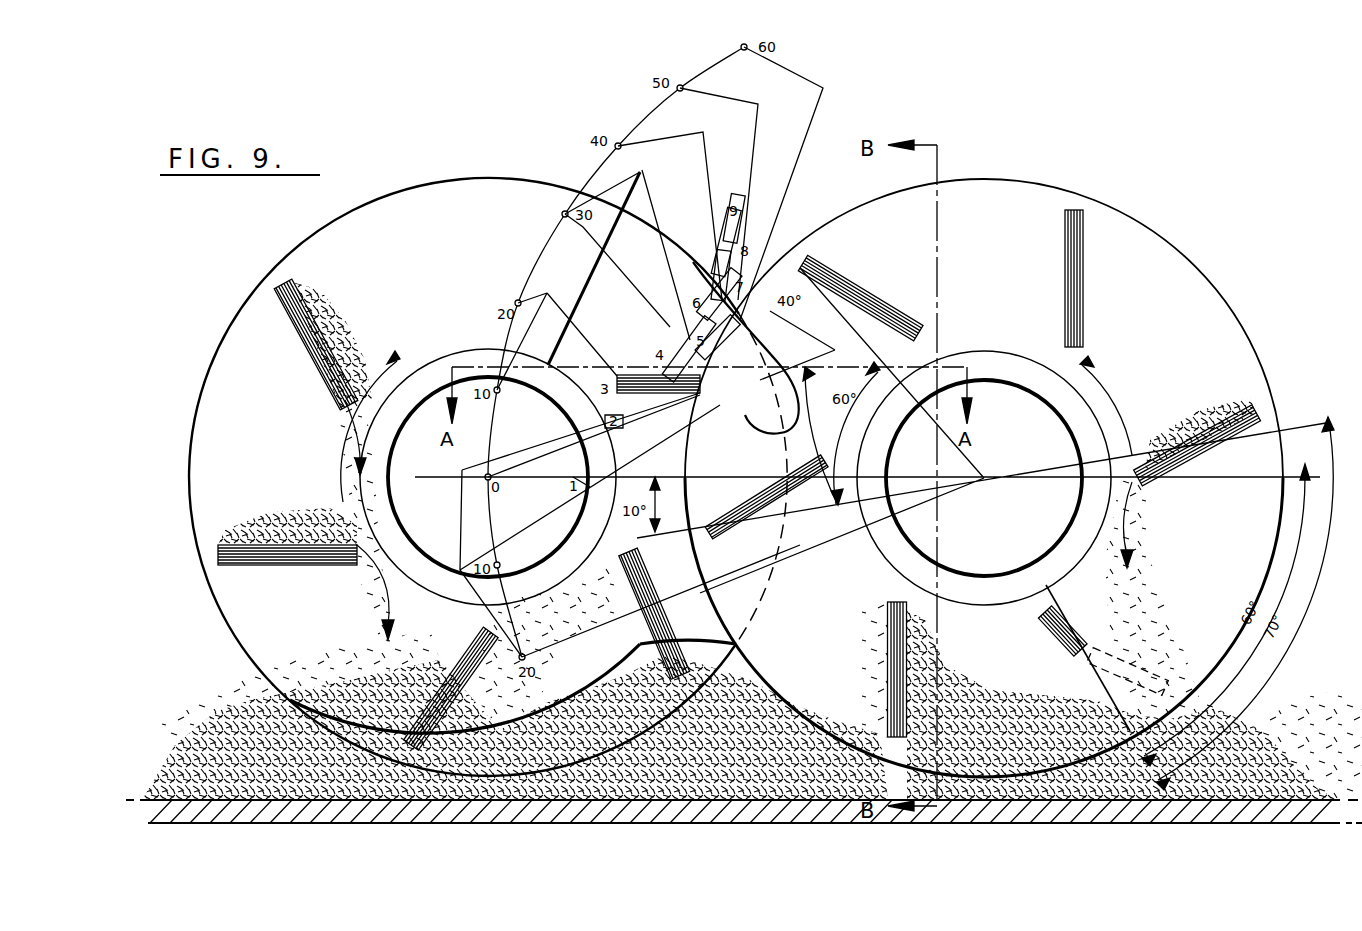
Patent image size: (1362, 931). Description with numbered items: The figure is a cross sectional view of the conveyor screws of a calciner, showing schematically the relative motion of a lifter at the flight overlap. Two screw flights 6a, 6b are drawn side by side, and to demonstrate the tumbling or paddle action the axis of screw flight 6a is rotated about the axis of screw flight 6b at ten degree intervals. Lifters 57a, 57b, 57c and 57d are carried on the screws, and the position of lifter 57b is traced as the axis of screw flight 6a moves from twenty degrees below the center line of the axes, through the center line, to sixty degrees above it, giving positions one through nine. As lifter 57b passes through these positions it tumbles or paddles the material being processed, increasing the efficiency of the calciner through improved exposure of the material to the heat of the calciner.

The screw flight 6a is at (420, 186).
The screw flight 6b is at (1143, 222).
The lifter 57a is at (876, 296).
The lifter 57b is at (632, 376).
The lifter 57c is at (708, 526).
The lifter 57d is at (684, 656).